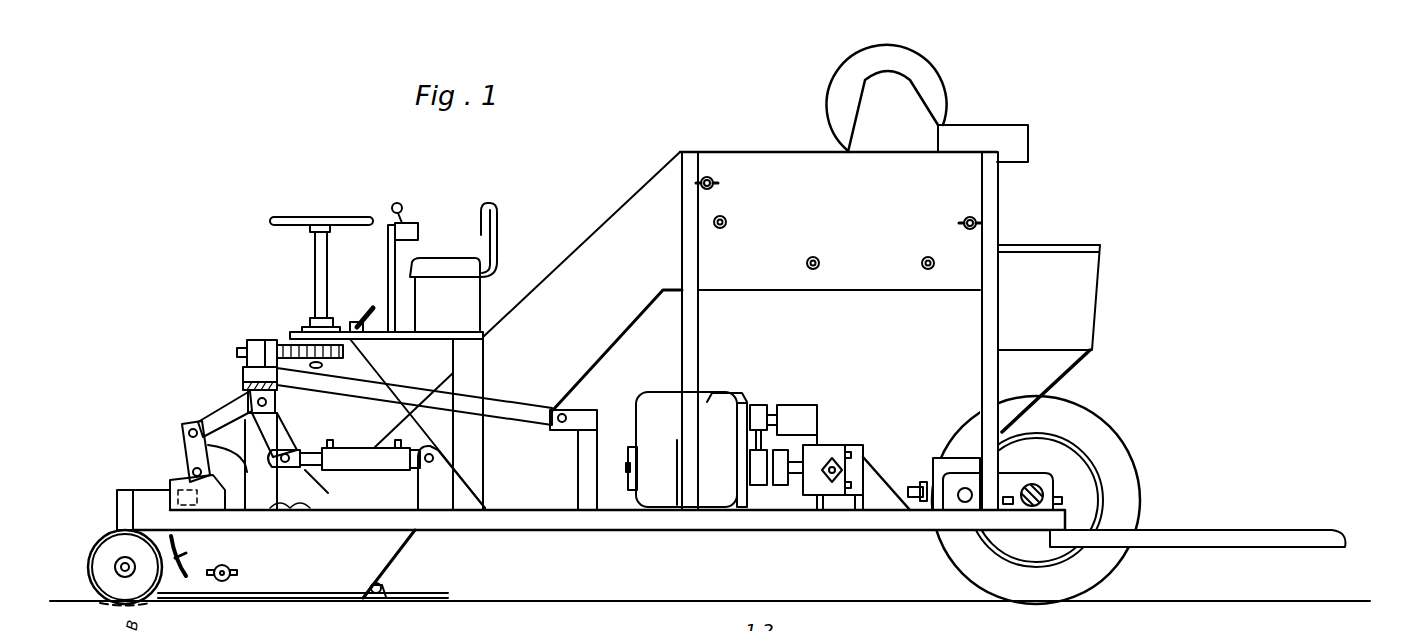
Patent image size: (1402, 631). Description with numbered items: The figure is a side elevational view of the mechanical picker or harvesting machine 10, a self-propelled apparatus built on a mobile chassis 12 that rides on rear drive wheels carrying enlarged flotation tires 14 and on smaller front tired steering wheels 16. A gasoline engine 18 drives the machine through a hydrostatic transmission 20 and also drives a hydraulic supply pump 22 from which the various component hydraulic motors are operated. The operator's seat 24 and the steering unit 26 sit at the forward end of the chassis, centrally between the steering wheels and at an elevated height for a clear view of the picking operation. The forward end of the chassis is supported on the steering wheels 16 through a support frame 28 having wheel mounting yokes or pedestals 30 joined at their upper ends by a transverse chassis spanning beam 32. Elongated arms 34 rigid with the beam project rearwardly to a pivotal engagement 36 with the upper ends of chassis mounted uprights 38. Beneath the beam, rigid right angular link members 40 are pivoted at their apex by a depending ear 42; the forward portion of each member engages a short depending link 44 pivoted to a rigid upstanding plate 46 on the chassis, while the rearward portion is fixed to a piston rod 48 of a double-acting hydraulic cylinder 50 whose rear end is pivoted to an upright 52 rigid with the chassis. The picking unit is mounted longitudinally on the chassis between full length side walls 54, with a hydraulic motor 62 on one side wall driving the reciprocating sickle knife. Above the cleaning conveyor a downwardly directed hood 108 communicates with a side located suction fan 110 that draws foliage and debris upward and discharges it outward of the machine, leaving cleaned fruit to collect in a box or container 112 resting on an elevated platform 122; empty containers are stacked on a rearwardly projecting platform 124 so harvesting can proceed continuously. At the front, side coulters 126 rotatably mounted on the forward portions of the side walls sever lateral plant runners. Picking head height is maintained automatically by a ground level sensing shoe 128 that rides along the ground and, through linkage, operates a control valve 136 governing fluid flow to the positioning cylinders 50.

The mechanical picker or harvesting machine 10 is at (1050, 208).
The mobile chassis 12 is at (623, 520).
The enlarged flotation tires 14 is at (1110, 444).
The front tired steering wheels 16 is at (283, 593).
The gasoline engine 18 is at (710, 401).
The hydrostatic transmission 20 is at (940, 462).
The hydraulic supply pump 22 is at (792, 416).
The operator's seat 24 is at (437, 265).
The steering unit 26 is at (323, 223).
The support frame 28 is at (234, 383).
The wheel mounting yokes or pedestals 30 is at (252, 442).
The transverse chassis spanning beam 32 is at (263, 340).
The elongated arms 34 is at (498, 412).
The pivotal engagement 36 is at (567, 413).
The chassis mounted uprights 38 is at (587, 452).
The rigid right angular link members 40 is at (220, 417).
The depending ear 42 is at (272, 397).
The short depending link 44 is at (193, 443).
The rigid upstanding plate 46 is at (192, 488).
The piston rod 48 is at (314, 444).
The double-acting hydraulic cylinder 50 is at (375, 458).
The upright 52 is at (443, 493).
The side walls 54 is at (883, 261).
The hydraulic motor 62 is at (232, 566).
The hood 108 is at (902, 110).
The suction fan 110 is at (918, 80).
The box or container 112 is at (1087, 293).
The elevated platform 122 is at (1040, 373).
The rearwardly projecting platform 124 is at (1165, 537).
The side coulters 126 is at (103, 553).
The ground level sensing shoe 128 is at (345, 602).
The control valve 136 is at (390, 588).